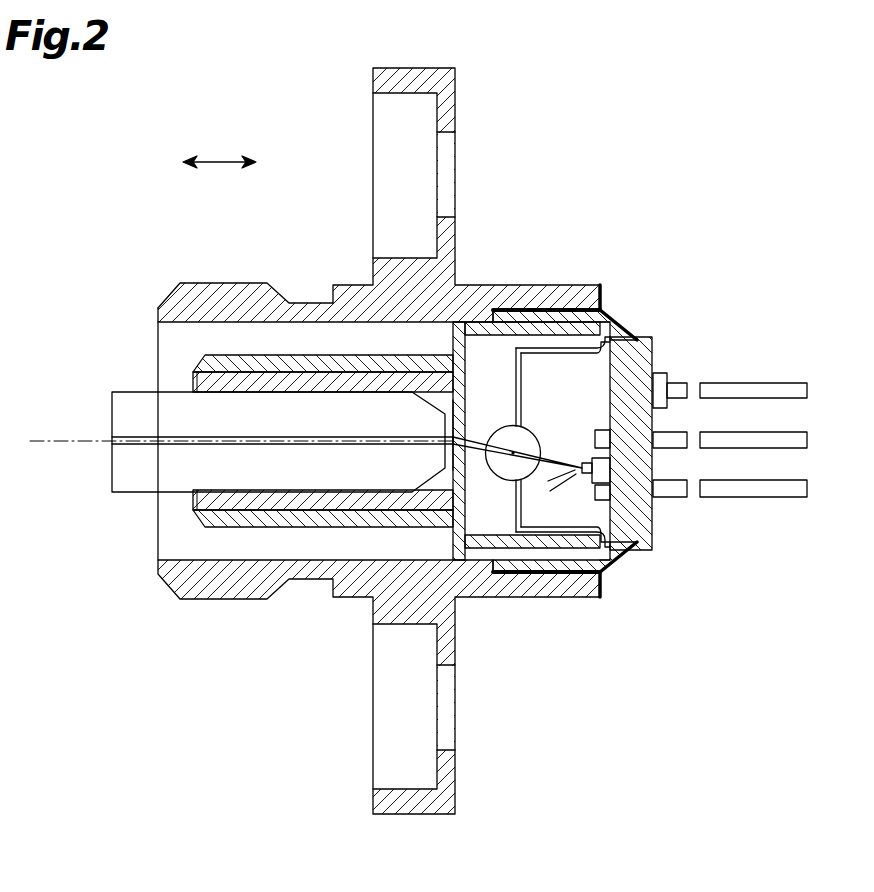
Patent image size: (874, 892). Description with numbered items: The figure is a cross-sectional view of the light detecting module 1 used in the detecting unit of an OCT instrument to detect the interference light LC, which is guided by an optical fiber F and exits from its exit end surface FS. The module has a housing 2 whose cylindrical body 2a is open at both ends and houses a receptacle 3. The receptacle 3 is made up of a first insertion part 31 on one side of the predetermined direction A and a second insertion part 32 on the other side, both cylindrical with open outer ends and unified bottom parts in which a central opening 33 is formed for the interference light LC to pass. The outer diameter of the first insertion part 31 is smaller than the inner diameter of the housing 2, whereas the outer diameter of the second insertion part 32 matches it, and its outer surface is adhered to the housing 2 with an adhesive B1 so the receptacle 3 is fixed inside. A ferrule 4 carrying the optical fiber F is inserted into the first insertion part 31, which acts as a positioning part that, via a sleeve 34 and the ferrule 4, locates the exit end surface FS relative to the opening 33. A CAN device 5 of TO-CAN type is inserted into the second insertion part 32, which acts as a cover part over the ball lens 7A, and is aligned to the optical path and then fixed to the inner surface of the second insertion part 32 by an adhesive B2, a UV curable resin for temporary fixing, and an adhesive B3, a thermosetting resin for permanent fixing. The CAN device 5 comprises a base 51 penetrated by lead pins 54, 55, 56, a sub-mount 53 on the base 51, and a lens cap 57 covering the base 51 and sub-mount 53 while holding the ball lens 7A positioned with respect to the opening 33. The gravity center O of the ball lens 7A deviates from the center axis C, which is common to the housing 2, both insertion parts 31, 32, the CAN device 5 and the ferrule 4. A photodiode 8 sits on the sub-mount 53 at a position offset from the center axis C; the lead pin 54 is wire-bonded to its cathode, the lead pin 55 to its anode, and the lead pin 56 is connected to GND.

The light detecting module 1 is at (680, 151).
The housing 2 is at (379, 441).
The cylindrical body 2a is at (228, 283).
The receptacle 3 is at (527, 514).
The first insertion part 31 is at (509, 502).
The second insertion part 32 is at (543, 562).
The opening 33 is at (460, 428).
The sleeve 34 is at (318, 508).
The ferrule 4 is at (125, 390).
The CAN device 5 is at (663, 437).
The base 51 is at (655, 520).
The sub-mount 53 is at (640, 458).
The lead pin 54 is at (808, 488).
The lead pin 55 is at (808, 440).
The lead pin 56 is at (808, 389).
The lens cap 57 is at (516, 512).
The ball lens 7A is at (522, 432).
The photodiode 8 is at (578, 480).
The predetermined direction A is at (224, 156).
The adhesive B1 is at (540, 308).
The adhesive B2 is at (597, 309).
The adhesive B3 is at (621, 324).
The center axis C is at (76, 445).
The optical fiber F is at (134, 447).
The exit end surface FS is at (445, 446).
The interference light LC is at (583, 462).
The gravity center O is at (506, 463).